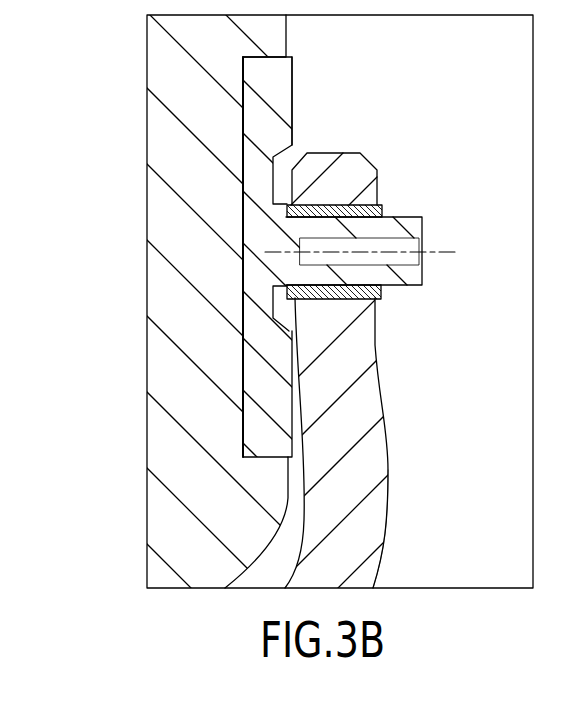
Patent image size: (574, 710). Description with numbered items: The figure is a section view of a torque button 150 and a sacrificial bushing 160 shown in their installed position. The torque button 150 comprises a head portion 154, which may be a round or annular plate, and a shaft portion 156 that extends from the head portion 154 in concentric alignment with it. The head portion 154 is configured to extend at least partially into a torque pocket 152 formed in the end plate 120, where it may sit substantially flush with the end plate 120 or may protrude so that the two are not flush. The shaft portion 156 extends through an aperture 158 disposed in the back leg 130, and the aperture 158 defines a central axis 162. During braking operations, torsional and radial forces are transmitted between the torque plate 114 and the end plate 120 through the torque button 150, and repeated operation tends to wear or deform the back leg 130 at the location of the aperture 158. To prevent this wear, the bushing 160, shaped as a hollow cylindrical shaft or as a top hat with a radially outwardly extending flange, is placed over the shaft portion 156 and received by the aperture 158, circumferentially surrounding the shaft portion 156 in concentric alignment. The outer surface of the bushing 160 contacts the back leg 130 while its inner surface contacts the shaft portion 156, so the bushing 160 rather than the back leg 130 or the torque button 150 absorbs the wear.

The torque plate 114 is at (391, 526).
The end plate 120 is at (157, 133).
The back leg 130 is at (382, 445).
The torque button 150 is at (292, 78).
The torque pocket 152 is at (244, 322).
The head portion 154 is at (285, 124).
The shaft portion 156 is at (410, 217).
The aperture 158 is at (337, 300).
The bushing 160 is at (363, 297).
The central axis 162 is at (469, 250).